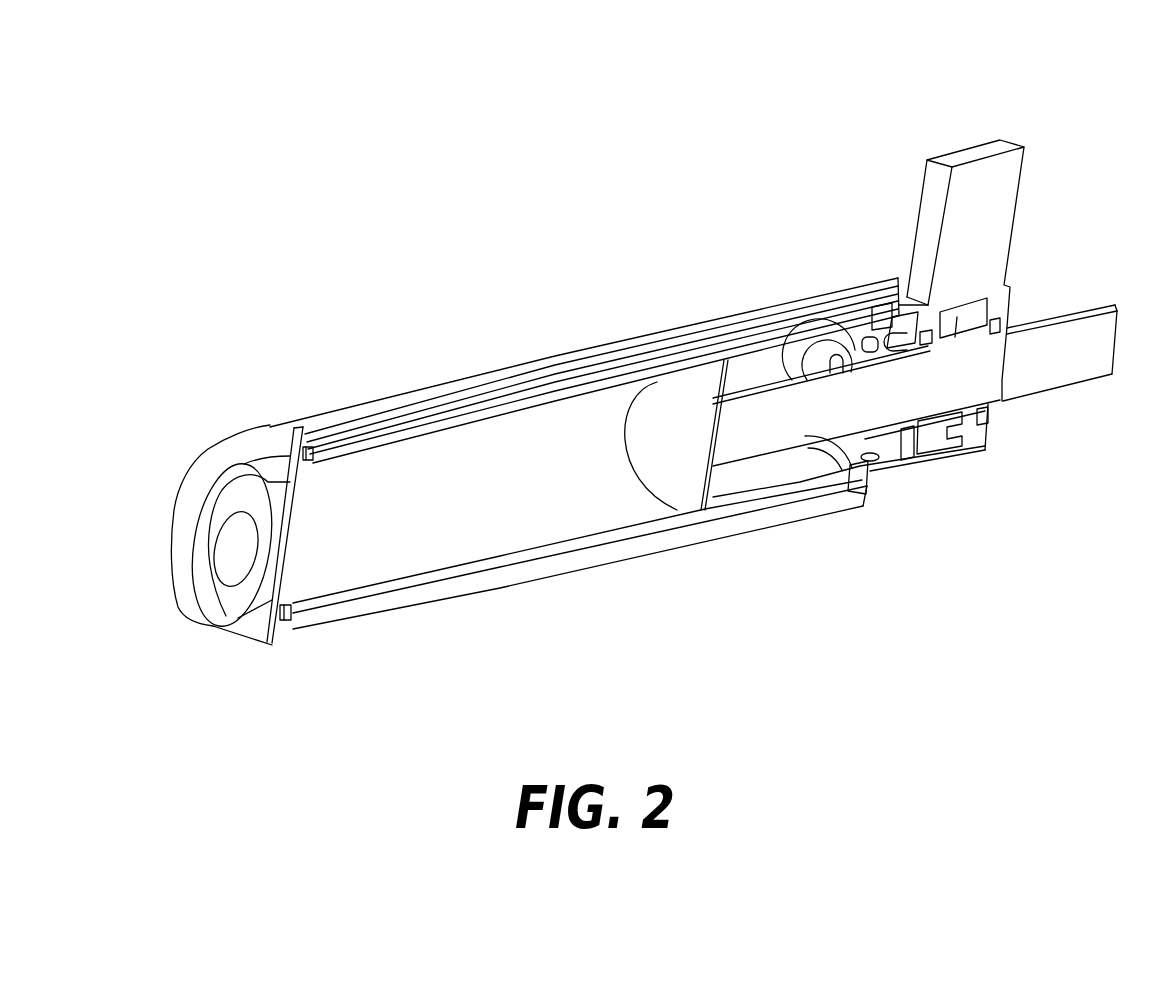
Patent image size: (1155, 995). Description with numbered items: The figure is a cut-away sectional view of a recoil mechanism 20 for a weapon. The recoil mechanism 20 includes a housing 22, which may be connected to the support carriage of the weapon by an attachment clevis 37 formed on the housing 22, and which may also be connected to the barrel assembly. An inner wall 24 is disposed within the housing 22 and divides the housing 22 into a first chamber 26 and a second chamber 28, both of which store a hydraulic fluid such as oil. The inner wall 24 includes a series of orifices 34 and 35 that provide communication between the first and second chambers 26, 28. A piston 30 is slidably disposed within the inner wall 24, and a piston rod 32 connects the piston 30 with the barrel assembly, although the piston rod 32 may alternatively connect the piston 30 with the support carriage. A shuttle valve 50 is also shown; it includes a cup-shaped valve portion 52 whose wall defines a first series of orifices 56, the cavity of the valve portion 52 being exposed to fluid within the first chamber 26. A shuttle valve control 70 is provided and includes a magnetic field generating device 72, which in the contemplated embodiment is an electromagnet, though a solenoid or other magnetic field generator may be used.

The recoil mechanism 20 is at (644, 377).
The housing 22 is at (737, 327).
The inner wall 24 is at (557, 397).
The first chamber 26 is at (483, 523).
The second chamber 28 is at (382, 415).
The piston 30 is at (677, 490).
The piston rod 32 is at (782, 428).
The orifices 34 is at (880, 313).
The orifices 35 is at (308, 450).
The attachment clevis 37 is at (215, 613).
The shuttle valve 50 is at (861, 522).
The valve portion 52 is at (815, 343).
The first series of orifices 56 is at (875, 460).
The shuttle valve control 70 is at (988, 227).
The magnetic field generating device 72 is at (1000, 213).